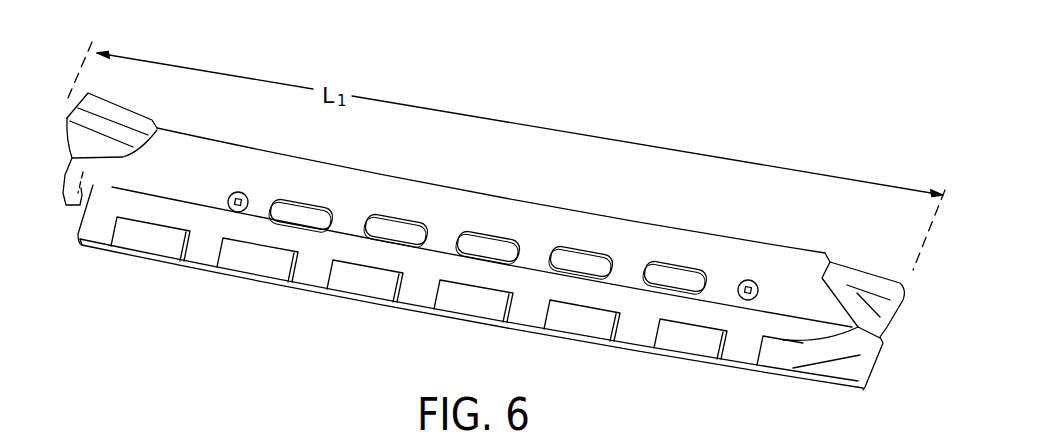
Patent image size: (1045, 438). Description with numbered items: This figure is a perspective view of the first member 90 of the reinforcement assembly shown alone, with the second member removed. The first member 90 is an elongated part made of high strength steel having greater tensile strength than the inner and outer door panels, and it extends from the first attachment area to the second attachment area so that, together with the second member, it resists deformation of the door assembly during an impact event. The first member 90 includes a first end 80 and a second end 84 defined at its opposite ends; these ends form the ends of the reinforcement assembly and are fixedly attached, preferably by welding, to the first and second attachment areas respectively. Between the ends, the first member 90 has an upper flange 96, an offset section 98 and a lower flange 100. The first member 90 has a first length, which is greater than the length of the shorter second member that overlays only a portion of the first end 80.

The first end 80 is at (82, 142).
The second end 84 is at (868, 277).
The first member 90 is at (457, 185).
The upper flange 96 is at (635, 242).
The offset section 98 is at (537, 283).
The lower flange 100 is at (683, 353).